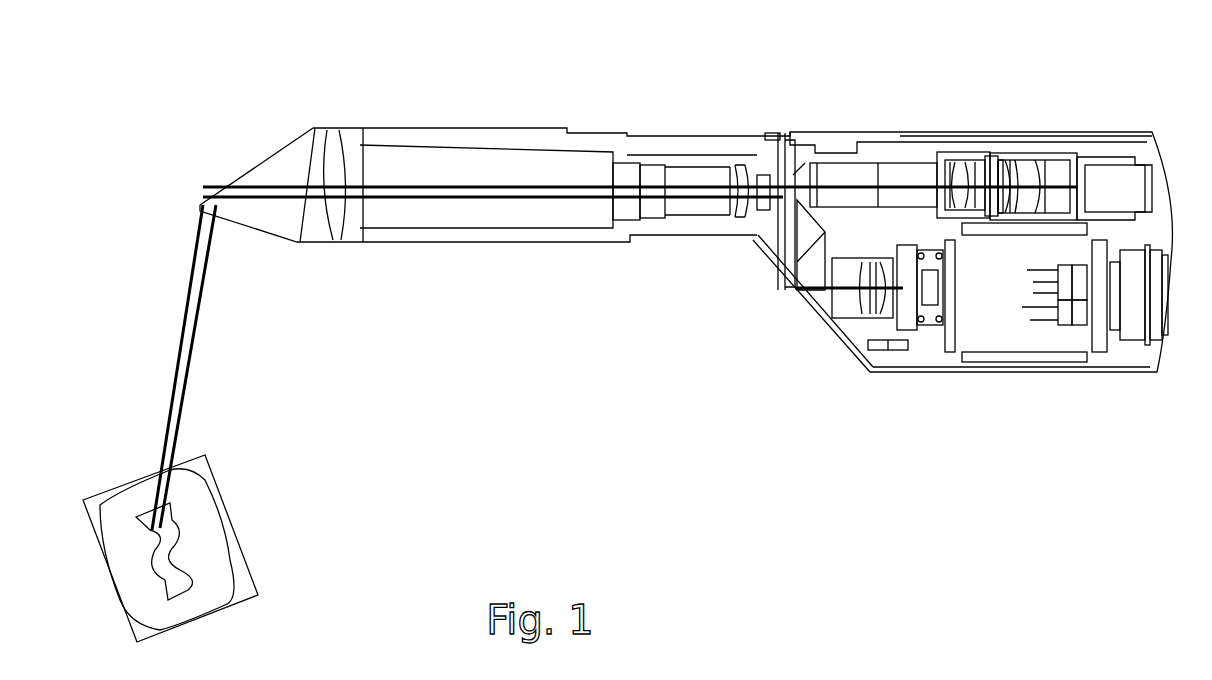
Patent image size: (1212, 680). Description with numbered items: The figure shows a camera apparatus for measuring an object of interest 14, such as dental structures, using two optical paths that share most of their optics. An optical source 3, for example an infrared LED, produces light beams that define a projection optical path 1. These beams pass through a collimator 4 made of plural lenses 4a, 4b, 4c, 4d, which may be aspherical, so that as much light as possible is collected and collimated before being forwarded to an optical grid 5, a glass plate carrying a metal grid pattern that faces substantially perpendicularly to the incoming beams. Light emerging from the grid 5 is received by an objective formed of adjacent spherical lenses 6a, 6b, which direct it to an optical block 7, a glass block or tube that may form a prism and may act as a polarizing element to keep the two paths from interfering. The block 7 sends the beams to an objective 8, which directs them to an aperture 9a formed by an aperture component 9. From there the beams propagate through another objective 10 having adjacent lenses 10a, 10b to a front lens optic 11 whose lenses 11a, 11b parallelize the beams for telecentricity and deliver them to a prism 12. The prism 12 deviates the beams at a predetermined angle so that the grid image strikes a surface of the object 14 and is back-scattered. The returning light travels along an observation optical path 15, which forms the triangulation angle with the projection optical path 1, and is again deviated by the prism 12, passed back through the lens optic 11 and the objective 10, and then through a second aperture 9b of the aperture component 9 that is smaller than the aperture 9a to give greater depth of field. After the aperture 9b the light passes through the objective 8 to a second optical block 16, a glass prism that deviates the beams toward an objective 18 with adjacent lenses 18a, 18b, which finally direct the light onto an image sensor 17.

The projection optical path 1 is at (537, 192).
The optical source 3 is at (1122, 170).
The collimator 4 is at (1092, 55).
The lens 4a is at (1066, 152).
The lens 4b is at (1045, 153).
The lens 4c is at (1010, 216).
The lens 4d is at (993, 218).
The optical grid 5 is at (987, 155).
The spherical lens 6a is at (962, 160).
The spherical lens 6b is at (935, 202).
The optical block 7 is at (845, 178).
The objective 8 is at (787, 135).
The aperture component 9 is at (762, 137).
The aperture 9a is at (763, 135).
The aperture 9b is at (765, 215).
The objective 10 is at (645, 296).
The lens 10a is at (718, 222).
The lens 10b is at (672, 222).
The front lens optic 11 is at (373, 50).
The lens 11a is at (349, 143).
The lens 11b is at (330, 132).
The prism 12 is at (292, 152).
The object of interest 14 is at (128, 498).
The observation optical path 15 is at (445, 204).
The optical block 16 is at (787, 284).
The image sensor 17 is at (915, 335).
The objective 18 is at (788, 398).
The lens 18a is at (885, 306).
The lens 18b is at (875, 305).